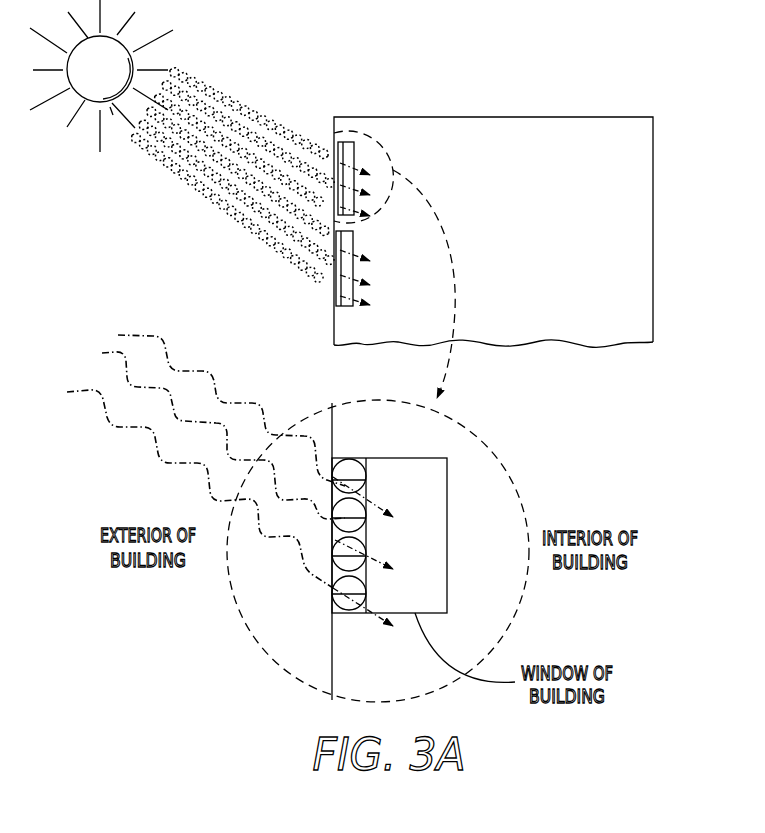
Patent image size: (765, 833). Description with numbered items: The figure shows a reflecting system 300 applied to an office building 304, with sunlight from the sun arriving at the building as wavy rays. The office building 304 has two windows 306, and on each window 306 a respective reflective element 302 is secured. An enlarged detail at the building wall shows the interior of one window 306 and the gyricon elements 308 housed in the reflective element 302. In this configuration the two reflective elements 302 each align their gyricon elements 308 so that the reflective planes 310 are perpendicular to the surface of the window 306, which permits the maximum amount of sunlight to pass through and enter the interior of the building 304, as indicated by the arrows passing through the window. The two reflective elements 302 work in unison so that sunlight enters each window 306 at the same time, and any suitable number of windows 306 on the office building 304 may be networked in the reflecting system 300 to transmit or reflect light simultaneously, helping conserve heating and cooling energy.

The reflecting system 300 is at (551, 74).
The reflective element 302 is at (331, 155).
The office building 304 is at (432, 117).
The window 306 is at (354, 242).
The gyricon element 308 is at (350, 480).
The reflective plane 310 is at (343, 515).